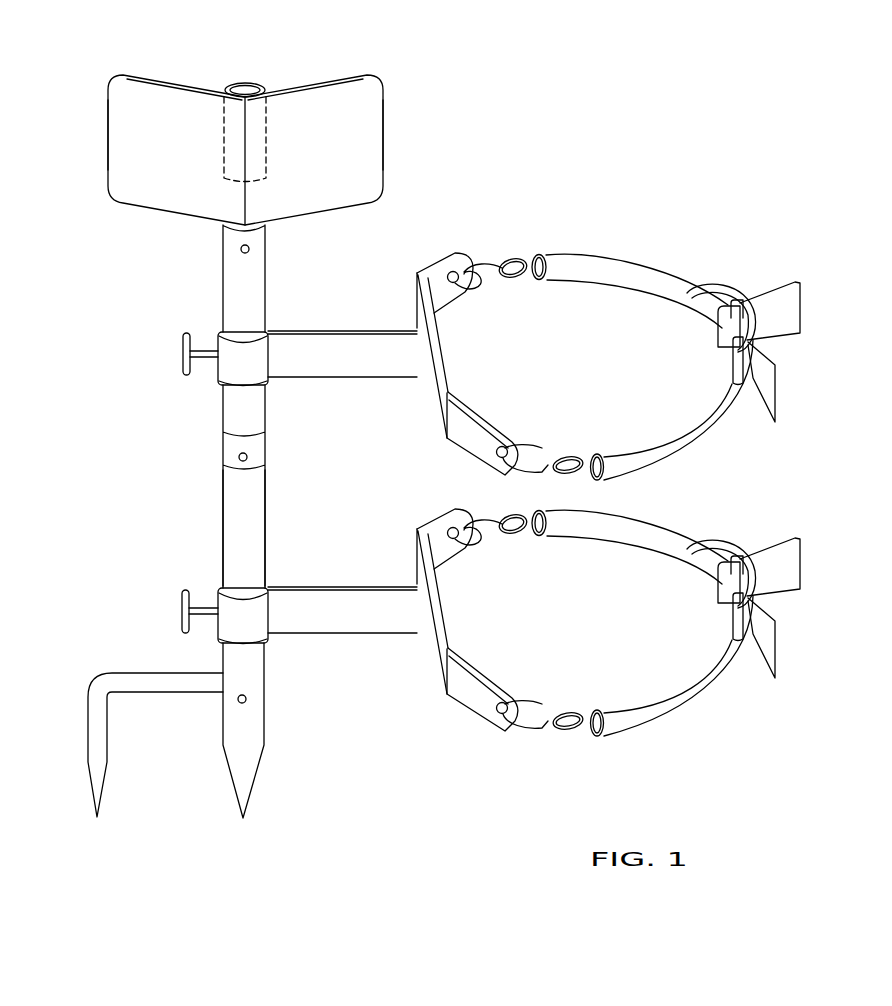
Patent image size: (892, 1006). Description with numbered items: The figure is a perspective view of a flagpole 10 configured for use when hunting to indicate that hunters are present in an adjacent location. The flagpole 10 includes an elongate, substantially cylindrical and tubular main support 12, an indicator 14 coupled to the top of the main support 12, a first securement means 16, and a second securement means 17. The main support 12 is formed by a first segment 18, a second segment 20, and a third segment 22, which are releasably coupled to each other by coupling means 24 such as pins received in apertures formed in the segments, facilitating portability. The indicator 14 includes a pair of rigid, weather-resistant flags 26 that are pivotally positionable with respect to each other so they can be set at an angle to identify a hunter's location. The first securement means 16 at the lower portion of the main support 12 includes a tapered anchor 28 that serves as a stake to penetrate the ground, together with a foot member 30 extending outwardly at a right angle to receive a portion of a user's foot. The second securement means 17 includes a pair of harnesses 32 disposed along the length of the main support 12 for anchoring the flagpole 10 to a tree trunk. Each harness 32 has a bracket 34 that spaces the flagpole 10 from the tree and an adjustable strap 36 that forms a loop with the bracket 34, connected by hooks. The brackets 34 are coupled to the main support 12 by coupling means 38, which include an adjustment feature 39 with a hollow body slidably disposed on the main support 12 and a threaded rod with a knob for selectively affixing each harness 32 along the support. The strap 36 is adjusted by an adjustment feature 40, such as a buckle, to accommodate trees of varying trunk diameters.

The flagpole 10 is at (520, 62).
The main support 12 is at (230, 256).
The indicator 14 is at (117, 154).
The first securement means 16 is at (270, 674).
The second securement means 17 is at (796, 279).
The first segment 18 is at (227, 512).
The second segment 20 is at (243, 298).
The third segment 22 is at (228, 84).
The coupling means 24 is at (268, 136).
The flags 26 is at (181, 155).
The anchor 28 is at (243, 778).
The foot member 30 is at (97, 742).
The harnesses 32 is at (662, 293).
The bracket 34 is at (348, 350).
The strap 36 is at (672, 448).
The coupling means 38 is at (227, 375).
The adjustment feature 39 is at (183, 354).
The adjustment feature 40 is at (755, 336).